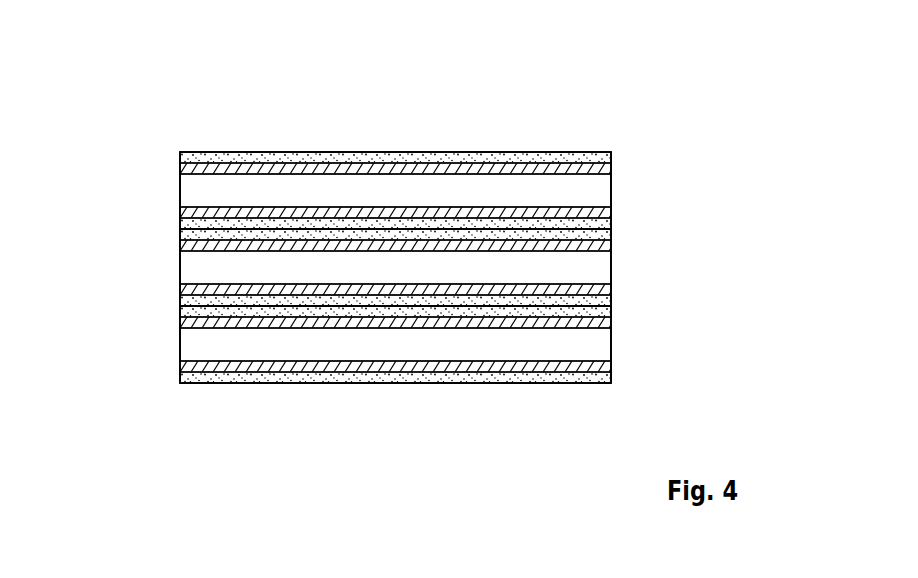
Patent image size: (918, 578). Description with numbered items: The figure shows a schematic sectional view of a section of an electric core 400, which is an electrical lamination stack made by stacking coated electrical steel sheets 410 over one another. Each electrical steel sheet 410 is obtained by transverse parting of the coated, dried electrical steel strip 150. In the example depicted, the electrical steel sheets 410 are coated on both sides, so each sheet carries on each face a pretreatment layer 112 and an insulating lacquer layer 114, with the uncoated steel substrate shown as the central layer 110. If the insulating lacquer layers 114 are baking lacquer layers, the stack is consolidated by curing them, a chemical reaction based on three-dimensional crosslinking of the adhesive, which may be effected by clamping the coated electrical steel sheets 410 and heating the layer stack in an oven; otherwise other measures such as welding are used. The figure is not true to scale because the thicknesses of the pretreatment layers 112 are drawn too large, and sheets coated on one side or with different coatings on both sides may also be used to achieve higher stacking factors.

The electric core 400 is at (498, 81).
The electrical steel sheet 410 is at (702, 107).
The coated, dried electrical steel strip 150 is at (398, 277).
The insulating lacquer layer 114 is at (612, 159).
The pretreatment layer 112 is at (612, 172).
The substrate layer 110 is at (605, 188).